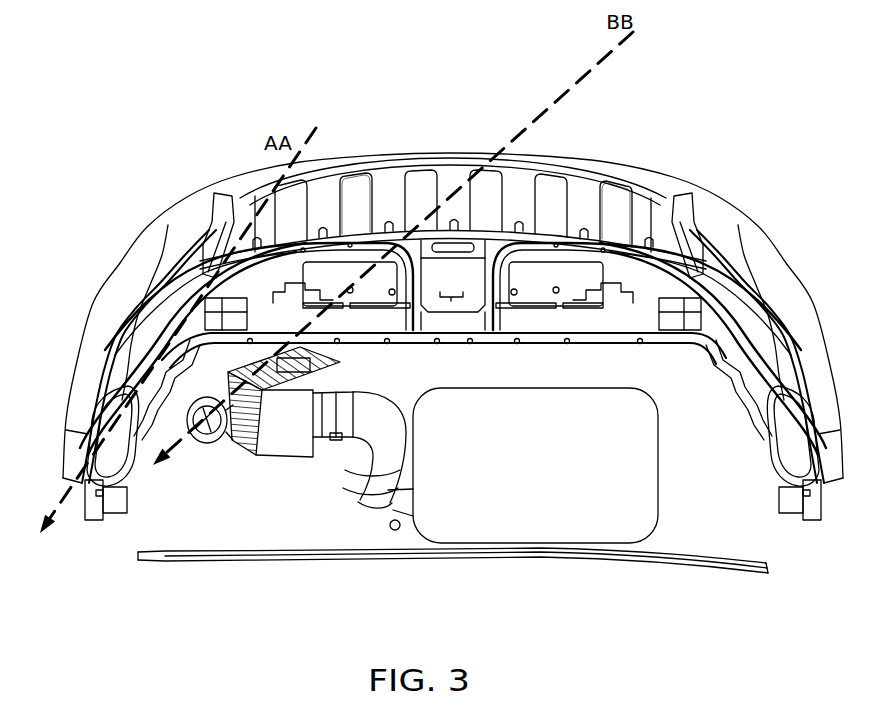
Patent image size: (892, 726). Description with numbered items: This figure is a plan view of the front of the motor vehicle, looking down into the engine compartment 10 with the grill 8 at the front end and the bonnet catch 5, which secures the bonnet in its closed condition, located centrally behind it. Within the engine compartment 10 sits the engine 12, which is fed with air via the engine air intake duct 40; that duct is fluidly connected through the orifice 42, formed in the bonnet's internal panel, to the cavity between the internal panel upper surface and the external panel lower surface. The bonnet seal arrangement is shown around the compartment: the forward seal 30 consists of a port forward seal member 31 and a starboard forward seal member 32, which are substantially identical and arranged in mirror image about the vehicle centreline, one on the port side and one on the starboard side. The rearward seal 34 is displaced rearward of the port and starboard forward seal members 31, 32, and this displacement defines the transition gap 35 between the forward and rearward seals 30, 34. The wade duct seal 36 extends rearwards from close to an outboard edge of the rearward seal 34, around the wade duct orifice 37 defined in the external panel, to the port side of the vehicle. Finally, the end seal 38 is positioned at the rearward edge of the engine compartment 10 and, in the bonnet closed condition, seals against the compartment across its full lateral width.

The bonnet catch 5 is at (452, 268).
The grill 8 is at (453, 146).
The engine compartment 10 is at (740, 345).
The engine 12 is at (518, 477).
The forward seal 30 is at (453, 211).
The port forward seal member 31 is at (358, 163).
The starboard forward seal member 32 is at (608, 178).
The rearward seal 34 is at (640, 333).
The transition gap 35 is at (168, 225).
The wade duct seal 36 is at (120, 515).
The wade duct orifice 37 is at (92, 410).
The end seal 38 is at (238, 563).
The engine air intake duct 40 is at (368, 513).
The orifice 42 is at (195, 450).